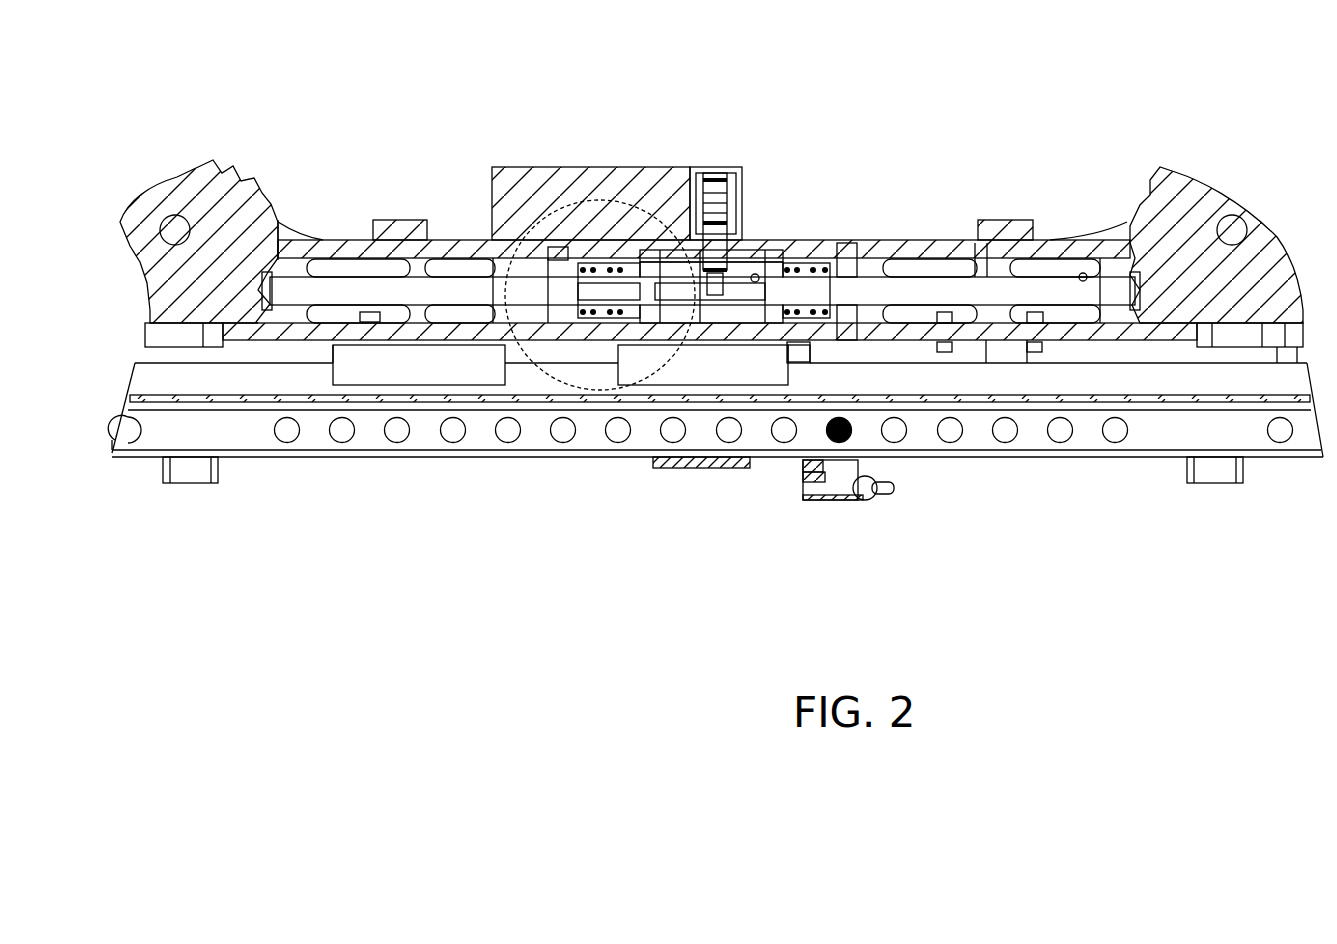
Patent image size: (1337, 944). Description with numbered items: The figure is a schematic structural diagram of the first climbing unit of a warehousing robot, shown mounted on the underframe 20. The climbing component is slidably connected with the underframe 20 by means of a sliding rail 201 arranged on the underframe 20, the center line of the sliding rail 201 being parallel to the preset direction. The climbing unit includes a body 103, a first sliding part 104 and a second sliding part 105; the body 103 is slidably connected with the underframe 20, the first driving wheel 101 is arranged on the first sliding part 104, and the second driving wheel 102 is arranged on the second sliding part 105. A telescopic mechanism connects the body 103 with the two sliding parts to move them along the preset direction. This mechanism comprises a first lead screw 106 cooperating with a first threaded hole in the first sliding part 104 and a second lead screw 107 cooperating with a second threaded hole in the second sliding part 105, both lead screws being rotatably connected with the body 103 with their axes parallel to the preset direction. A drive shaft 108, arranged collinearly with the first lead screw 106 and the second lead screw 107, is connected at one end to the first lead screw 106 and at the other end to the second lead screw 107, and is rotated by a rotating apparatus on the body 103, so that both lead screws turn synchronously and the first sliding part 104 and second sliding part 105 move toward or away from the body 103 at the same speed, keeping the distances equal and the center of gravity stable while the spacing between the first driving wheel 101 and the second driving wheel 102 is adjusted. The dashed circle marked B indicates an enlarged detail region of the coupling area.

The first driving wheel 101 is at (215, 163).
The second driving wheel 102 is at (1178, 253).
The body 103 is at (657, 250).
The first sliding part 104 is at (300, 240).
The second sliding part 105 is at (997, 267).
The first lead screw 106 is at (340, 298).
The second lead screw 107 is at (855, 297).
The drive shaft 108 is at (714, 295).
The underframe 20 is at (375, 420).
The sliding rail 201 is at (230, 378).
The detail region B is at (552, 373).